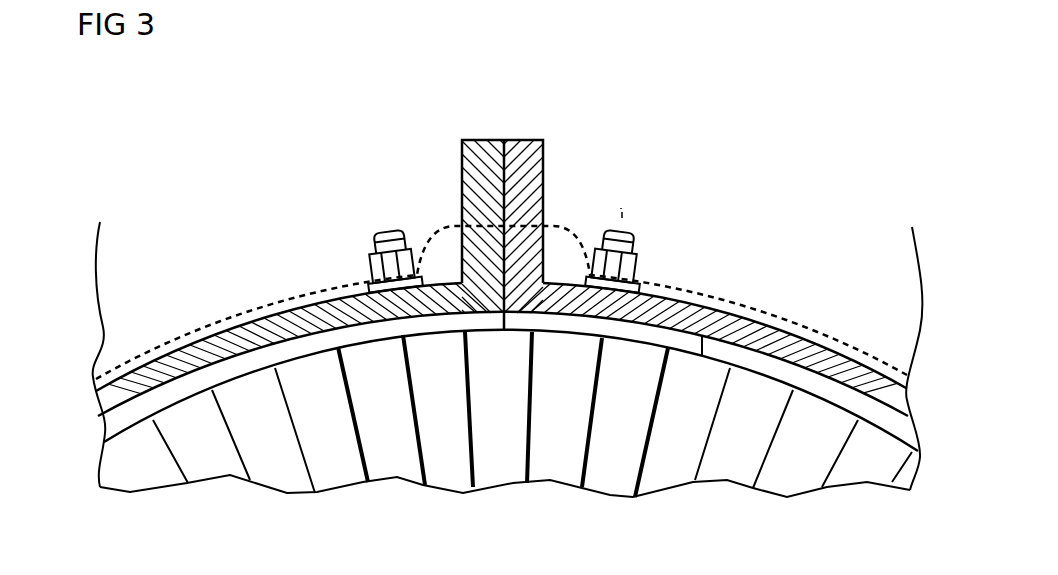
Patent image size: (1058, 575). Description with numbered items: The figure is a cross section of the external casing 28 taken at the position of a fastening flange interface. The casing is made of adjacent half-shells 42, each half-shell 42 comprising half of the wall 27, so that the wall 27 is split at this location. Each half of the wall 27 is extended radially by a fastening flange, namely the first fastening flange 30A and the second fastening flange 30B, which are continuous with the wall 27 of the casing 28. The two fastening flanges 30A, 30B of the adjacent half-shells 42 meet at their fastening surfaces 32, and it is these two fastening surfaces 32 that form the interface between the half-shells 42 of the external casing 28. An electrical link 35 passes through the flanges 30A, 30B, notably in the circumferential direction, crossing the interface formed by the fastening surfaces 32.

The wall 27 is at (260, 335).
The external casing 28 is at (280, 154).
The first fastening flange 30A is at (520, 150).
The second fastening flange 30B is at (485, 150).
The fastening surfaces 32 is at (505, 173).
The electrical link 35 is at (866, 353).
The half-shell 42 is at (188, 278).